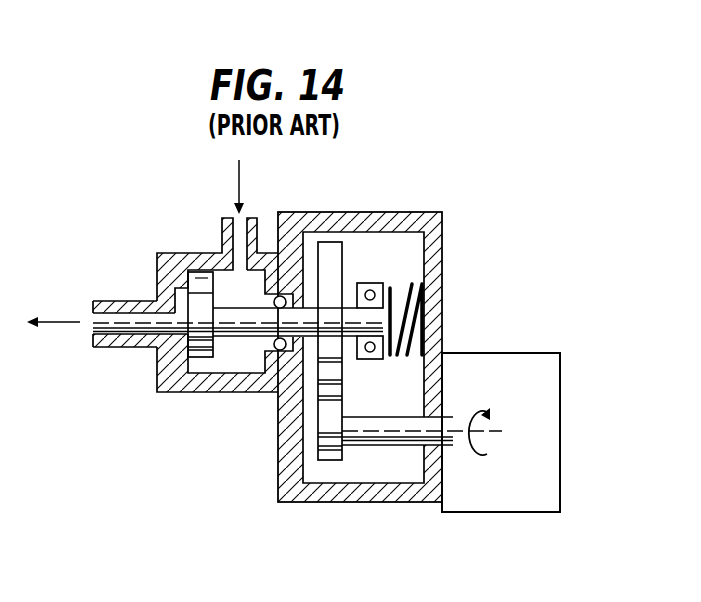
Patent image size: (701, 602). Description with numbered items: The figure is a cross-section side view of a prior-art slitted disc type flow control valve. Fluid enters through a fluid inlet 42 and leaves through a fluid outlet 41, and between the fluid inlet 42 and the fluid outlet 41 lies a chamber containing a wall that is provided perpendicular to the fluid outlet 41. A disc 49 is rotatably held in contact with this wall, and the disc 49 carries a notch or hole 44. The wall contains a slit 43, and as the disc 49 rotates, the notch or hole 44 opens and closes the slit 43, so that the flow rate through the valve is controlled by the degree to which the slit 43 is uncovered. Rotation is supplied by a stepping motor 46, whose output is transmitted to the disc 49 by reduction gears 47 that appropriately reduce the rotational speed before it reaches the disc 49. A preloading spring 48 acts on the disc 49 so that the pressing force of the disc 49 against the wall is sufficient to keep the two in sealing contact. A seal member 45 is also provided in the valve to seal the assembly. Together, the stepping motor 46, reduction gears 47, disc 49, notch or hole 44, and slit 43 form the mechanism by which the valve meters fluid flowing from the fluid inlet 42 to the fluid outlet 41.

The fluid outlet 41 is at (130, 348).
The fluid inlet 42 is at (262, 247).
The slit 43 is at (177, 301).
The notch or hole 44 is at (205, 298).
The seal member 45 is at (280, 351).
The stepping motor 46 is at (486, 318).
The reduction gears 47 is at (345, 252).
The preloading spring 48 is at (418, 288).
The disc 49 is at (209, 283).